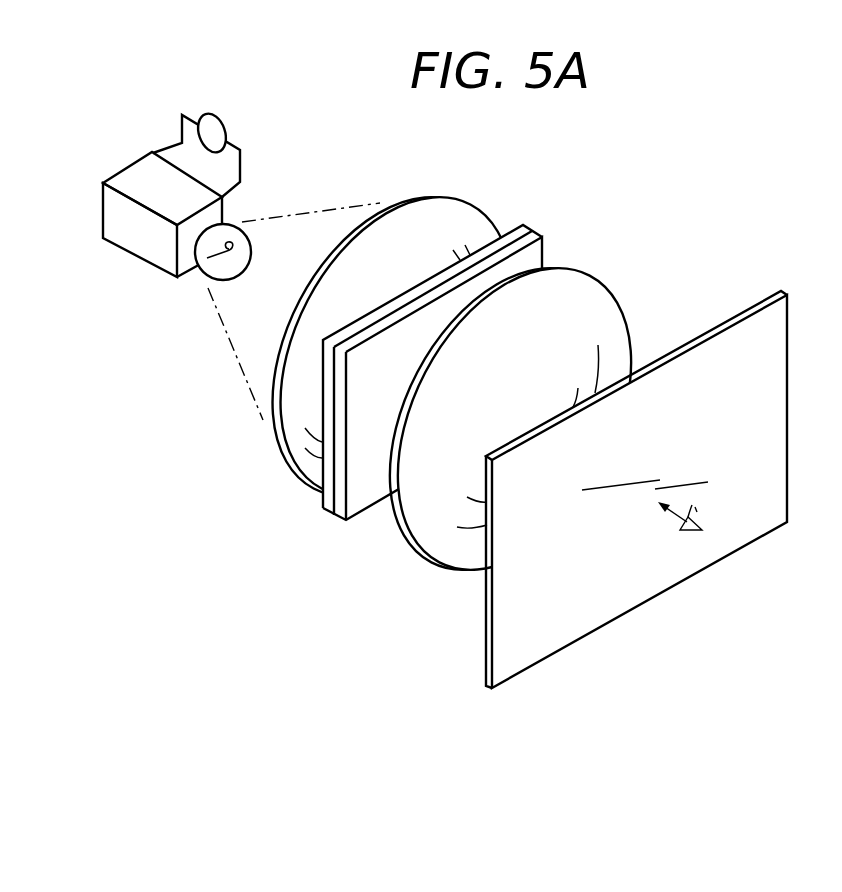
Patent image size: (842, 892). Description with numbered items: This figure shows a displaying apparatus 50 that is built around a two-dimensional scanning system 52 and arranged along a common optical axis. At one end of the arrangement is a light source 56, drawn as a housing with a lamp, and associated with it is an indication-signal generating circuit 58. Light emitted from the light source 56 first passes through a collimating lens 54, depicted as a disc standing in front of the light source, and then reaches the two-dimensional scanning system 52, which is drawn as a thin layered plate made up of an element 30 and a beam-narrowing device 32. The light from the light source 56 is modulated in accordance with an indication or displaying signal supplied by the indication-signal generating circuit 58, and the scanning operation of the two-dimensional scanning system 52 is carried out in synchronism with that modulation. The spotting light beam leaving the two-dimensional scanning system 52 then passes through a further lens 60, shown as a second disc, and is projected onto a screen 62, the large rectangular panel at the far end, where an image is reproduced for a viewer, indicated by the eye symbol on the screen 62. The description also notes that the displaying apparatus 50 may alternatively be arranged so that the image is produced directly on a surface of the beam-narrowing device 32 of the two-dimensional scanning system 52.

The first layer of plate 30 is at (508, 240).
The beam-narrowing device 32 is at (540, 253).
The displaying apparatus 50 is at (456, 365).
The two-dimensional scanning system 52 is at (469, 331).
The collimating lens 54 is at (406, 202).
The light source 56 is at (153, 262).
The indication-signal generating circuit 58 is at (226, 126).
The lens 60 is at (400, 532).
The screen 62 is at (780, 322).